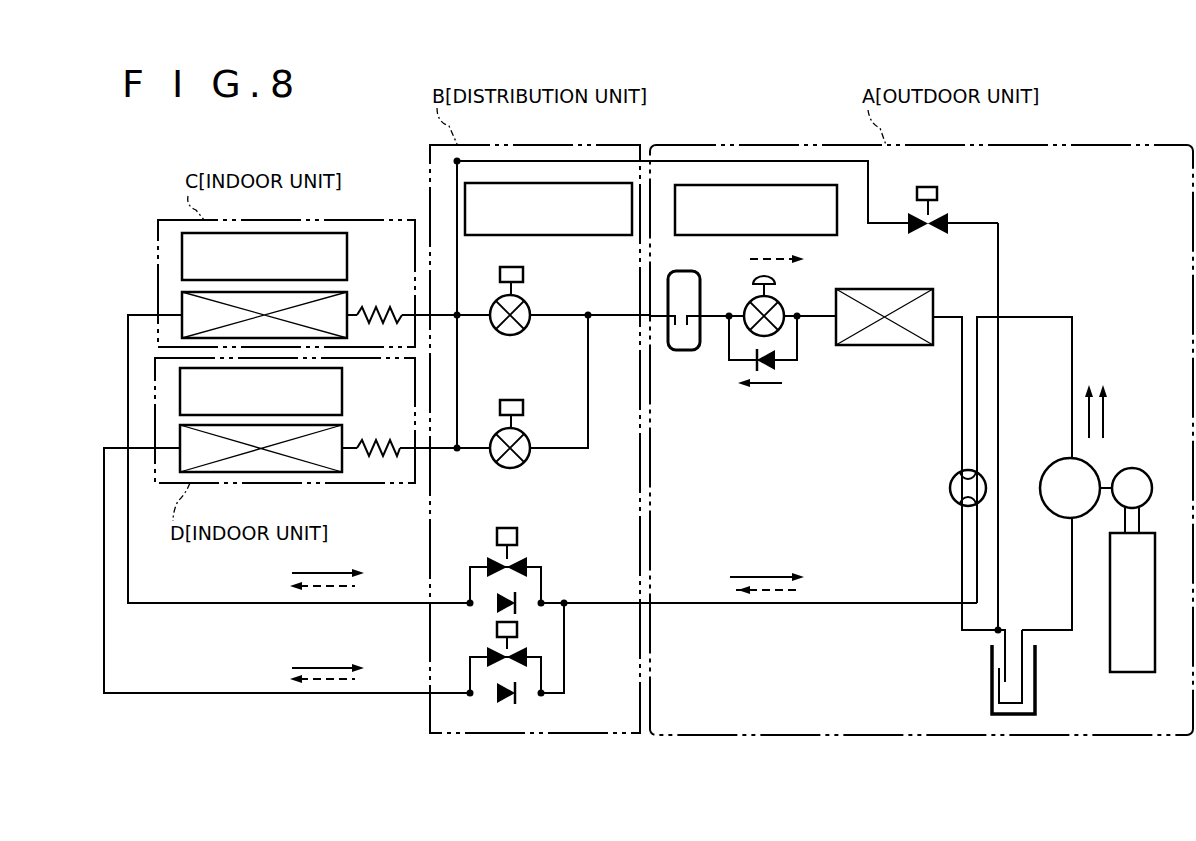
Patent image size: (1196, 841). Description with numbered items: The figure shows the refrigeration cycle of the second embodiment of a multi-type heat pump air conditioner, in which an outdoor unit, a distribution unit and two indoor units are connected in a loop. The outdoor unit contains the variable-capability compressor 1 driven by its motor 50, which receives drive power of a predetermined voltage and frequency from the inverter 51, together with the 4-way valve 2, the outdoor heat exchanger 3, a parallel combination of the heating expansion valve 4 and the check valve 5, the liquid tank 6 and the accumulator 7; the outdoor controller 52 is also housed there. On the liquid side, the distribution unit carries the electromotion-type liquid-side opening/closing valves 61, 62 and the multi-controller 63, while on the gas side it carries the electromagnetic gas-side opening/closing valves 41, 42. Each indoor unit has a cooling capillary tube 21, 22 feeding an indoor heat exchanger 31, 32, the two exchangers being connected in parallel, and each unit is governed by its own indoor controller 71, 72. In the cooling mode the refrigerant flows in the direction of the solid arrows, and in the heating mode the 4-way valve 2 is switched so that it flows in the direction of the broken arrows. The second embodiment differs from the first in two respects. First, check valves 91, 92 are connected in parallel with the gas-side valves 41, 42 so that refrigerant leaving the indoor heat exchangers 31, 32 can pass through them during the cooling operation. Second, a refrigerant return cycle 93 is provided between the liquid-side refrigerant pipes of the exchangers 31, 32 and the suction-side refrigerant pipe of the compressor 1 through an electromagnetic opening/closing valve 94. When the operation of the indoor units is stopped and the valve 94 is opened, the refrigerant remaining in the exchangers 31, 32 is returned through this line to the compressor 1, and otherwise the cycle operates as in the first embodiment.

The variable-capability compressor 1 is at (1053, 505).
The 4-way valve 2 is at (953, 485).
The outdoor heat exchanger 3 is at (896, 300).
The heating expansion valve 4 is at (778, 310).
The check valve 5 is at (772, 365).
The liquid tank 6 is at (687, 352).
The accumulator 7 is at (992, 696).
The cooling capillary tube 21 is at (385, 311).
The cooling capillary tube 22 is at (385, 445).
The indoor heat exchanger 31 is at (343, 300).
The indoor heat exchanger 32 is at (338, 432).
The gas-side opening/closing valve 41 is at (523, 552).
The gas-side opening/closing valve 42 is at (518, 645).
The motor 50 is at (1136, 470).
The inverter 51 is at (1135, 672).
The outdoor controller 52 is at (820, 238).
The liquid-side opening/closing valve 61 is at (528, 310).
The liquid-side opening/closing valve 62 is at (528, 442).
The multi-controller 63 is at (600, 236).
The indoor controller 71 is at (347, 245).
The indoor controller 72 is at (334, 382).
The check valve 91 is at (494, 607).
The check valve 92 is at (513, 700).
The refrigerant return cycle 93 is at (728, 161).
The electromagnetic opening/closing valve 94 is at (940, 206).